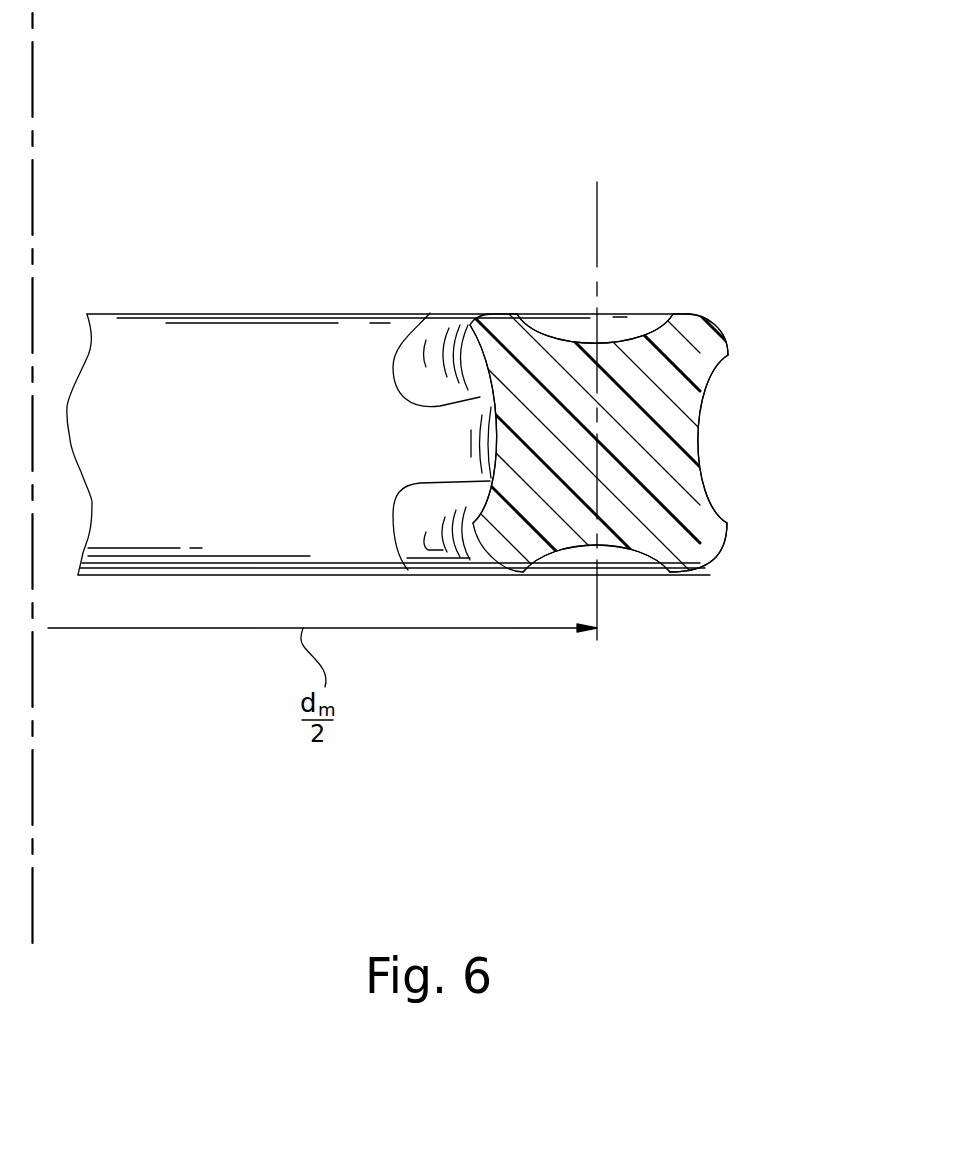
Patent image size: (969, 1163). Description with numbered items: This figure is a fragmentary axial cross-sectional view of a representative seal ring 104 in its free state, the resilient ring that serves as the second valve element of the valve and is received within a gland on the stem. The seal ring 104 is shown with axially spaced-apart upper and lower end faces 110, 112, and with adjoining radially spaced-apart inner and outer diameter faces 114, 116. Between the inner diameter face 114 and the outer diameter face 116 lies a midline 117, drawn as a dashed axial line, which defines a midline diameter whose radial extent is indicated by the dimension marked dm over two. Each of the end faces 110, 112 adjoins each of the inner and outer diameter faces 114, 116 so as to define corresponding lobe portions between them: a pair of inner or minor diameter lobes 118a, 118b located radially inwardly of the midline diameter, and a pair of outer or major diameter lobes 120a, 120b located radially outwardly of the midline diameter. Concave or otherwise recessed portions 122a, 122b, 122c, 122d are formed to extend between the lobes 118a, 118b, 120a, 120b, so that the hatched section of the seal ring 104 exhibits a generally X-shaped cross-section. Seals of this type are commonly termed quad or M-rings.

The seal ring 104 is at (548, 447).
The upper end face 110 is at (292, 313).
The lower end face 112 is at (223, 575).
The inner diameter face 114 is at (430, 315).
The outer diameter face 116 is at (707, 400).
The midline 117 is at (597, 207).
The inner diameter lobe 118a is at (487, 577).
The inner diameter lobe 118b is at (500, 315).
The outer diameter lobe 120a is at (717, 565).
The outer diameter lobe 120b is at (723, 328).
The recessed portion 122a is at (613, 314).
The recessed portion 122b is at (710, 483).
The recessed portion 122c is at (627, 557).
The recessed portion 122d is at (415, 573).